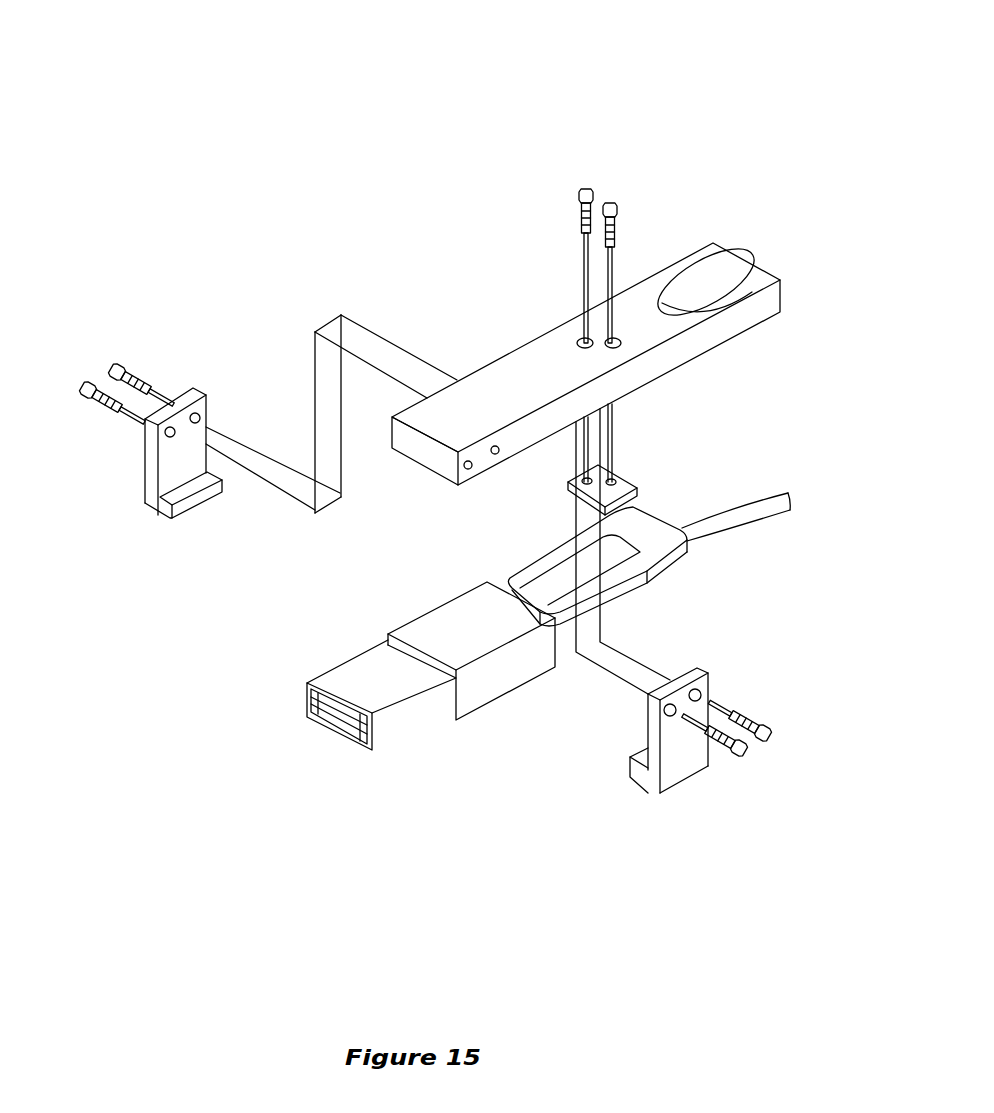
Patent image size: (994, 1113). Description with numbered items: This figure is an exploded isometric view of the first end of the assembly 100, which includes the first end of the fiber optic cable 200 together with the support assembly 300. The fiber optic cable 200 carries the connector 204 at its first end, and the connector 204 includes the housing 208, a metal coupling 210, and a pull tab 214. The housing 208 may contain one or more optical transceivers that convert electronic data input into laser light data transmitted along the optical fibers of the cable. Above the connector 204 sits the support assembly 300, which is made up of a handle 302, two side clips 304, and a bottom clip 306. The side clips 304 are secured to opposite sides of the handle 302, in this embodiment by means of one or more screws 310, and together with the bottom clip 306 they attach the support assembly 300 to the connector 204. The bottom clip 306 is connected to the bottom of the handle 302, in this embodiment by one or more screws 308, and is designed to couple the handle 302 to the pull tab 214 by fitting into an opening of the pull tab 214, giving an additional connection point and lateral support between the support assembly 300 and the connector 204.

The assembly 100 is at (103, 36).
The fiber optic cable 200 is at (252, 775).
The connector 204 is at (722, 832).
The housing 208 is at (458, 612).
The metal coupling 210 is at (338, 685).
The pull tab 214 is at (512, 580).
The support assembly 300 is at (798, 121).
The handle 302 is at (548, 395).
The side clips 304 is at (152, 503).
The bottom clip 306 is at (622, 488).
The screws 308 is at (594, 197).
The screws 310 is at (110, 374).